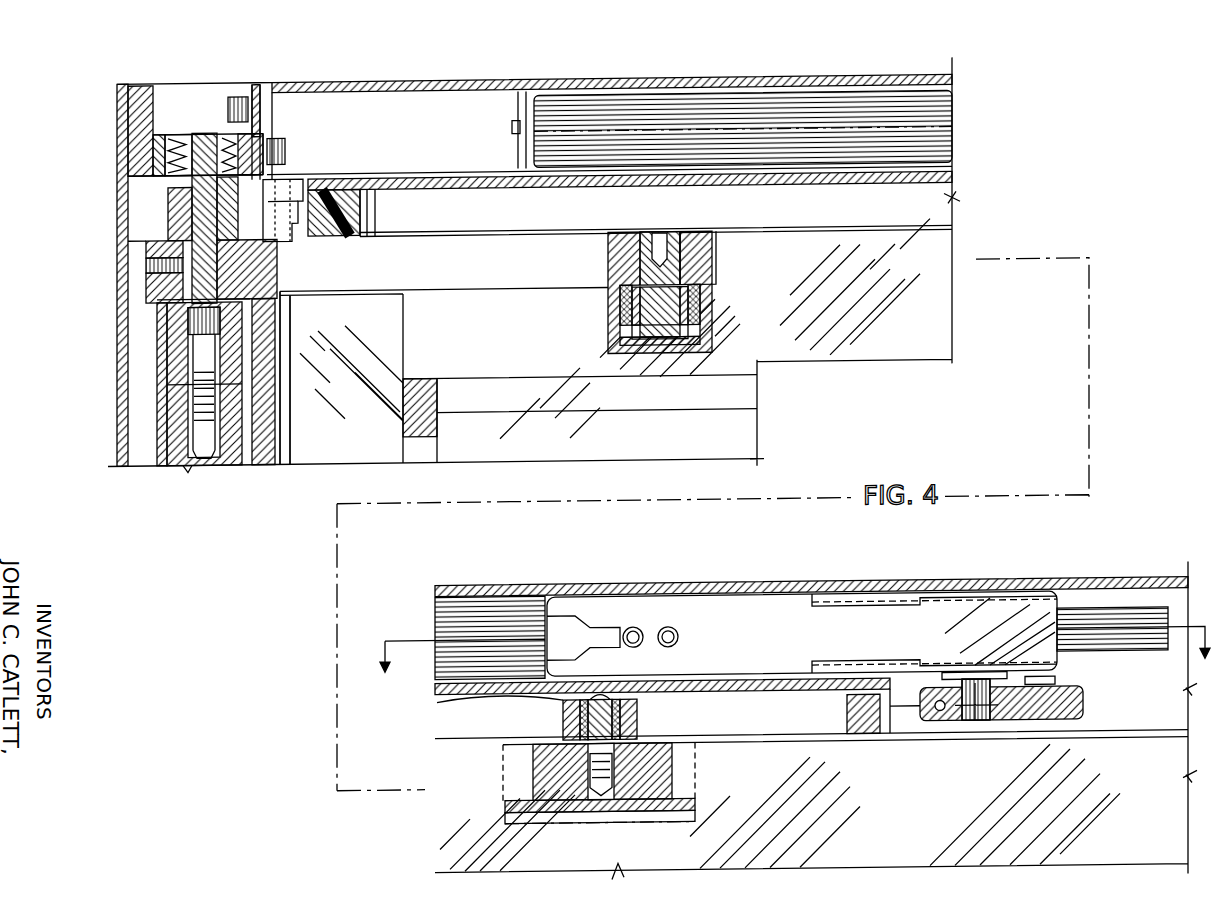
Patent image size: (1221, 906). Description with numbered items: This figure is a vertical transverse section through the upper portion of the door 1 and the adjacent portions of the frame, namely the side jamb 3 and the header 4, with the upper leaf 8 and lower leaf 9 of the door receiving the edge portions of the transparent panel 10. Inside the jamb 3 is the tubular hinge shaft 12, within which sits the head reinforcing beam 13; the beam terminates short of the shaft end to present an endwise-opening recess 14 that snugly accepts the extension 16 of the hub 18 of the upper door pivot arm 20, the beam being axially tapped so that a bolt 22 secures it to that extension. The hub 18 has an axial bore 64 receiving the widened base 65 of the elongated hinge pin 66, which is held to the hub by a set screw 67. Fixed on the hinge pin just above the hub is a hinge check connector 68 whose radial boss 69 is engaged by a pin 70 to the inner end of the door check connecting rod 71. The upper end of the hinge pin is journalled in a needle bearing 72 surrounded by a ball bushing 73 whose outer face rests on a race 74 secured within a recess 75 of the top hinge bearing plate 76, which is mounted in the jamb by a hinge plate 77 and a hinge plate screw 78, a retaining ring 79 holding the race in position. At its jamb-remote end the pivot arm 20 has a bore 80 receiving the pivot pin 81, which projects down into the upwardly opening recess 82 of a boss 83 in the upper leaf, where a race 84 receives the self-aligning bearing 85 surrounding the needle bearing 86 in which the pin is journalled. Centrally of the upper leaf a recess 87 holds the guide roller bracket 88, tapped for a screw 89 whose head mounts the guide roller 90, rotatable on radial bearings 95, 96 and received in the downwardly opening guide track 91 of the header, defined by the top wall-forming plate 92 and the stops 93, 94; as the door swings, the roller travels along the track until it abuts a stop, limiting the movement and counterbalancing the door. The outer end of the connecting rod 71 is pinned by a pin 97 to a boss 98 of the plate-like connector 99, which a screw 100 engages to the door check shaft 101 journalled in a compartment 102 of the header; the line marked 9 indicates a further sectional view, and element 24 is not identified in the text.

The door 1 is at (912, 353).
The side jamb 3 is at (117, 117).
The header 4 is at (915, 70).
The upper leaf 8 is at (947, 249).
The lower leaf 9 is at (791, 658).
The transparent panel 10 is at (747, 438).
The hinge shaft 12 is at (162, 468).
The head reinforcing beam 13 is at (175, 468).
The endwise-opening recess 14 is at (168, 353).
The hub extension 16 is at (157, 328).
The hub 18 is at (153, 238).
The upper door pivot arm 20 is at (147, 237).
The bolt 22 is at (187, 310).
The inner partition 24 is at (460, 290).
The axial bore 64 is at (148, 284).
The hinge pin base 65 is at (147, 270).
The hinge pin 66 is at (193, 213).
The set screw 67 is at (147, 260).
The hinge check connector 68 is at (180, 200).
The boss 69 is at (292, 218).
The pin 70 is at (283, 177).
The door check connecting rod 71 is at (297, 183).
The needle bearing 72 is at (176, 140).
The ball bushing 73 is at (157, 147).
The race 74 is at (157, 153).
The recess 75 is at (152, 167).
The top hinge bearing plate 76 is at (160, 133).
The hinge plate 77 is at (147, 93).
The hinge plate screw 78 is at (287, 143).
The retaining ring 79 is at (160, 167).
The bore 80 is at (690, 235).
The pivot pin 81 is at (673, 232).
The recess 82 is at (703, 356).
The boss 83 is at (670, 356).
The race 84 is at (710, 327).
The self-aligning bearing 85 is at (713, 312).
The needle bearing 86 is at (713, 300).
The recess 87 is at (683, 790).
The guide roller bracket 88 is at (650, 795).
The screw 89 is at (603, 807).
The guide roller 90 is at (437, 702).
The guide track 91 is at (457, 222).
The top wall-forming plate 92 is at (403, 192).
The stop 93 is at (857, 730).
The stop 94 is at (357, 235).
The radial bearing 95 is at (637, 700).
The radial bearing 96 is at (637, 716).
The pin 97 is at (1050, 682).
The boss 98 is at (1053, 690).
The connector 99 is at (1082, 703).
The screw 100 is at (970, 722).
The door check shaft 101 is at (987, 705).
The compartment 102 is at (1037, 607).